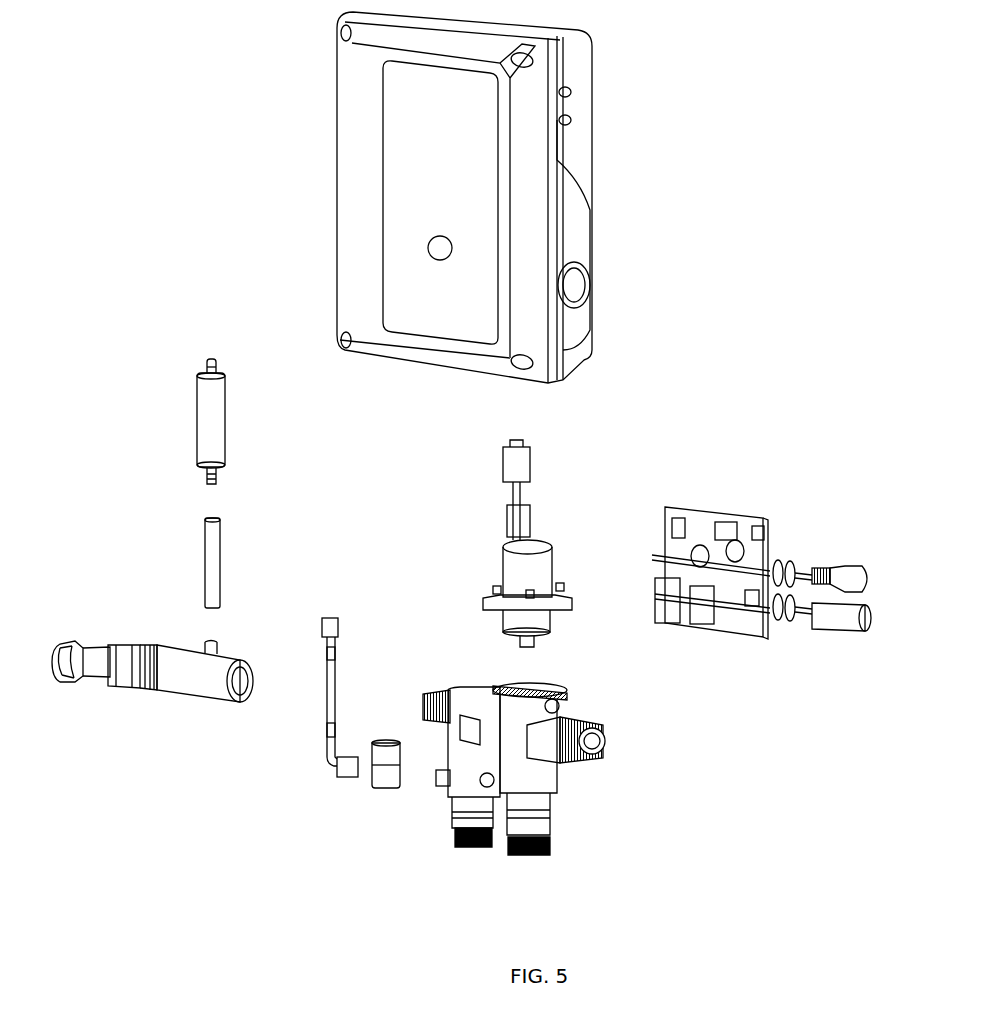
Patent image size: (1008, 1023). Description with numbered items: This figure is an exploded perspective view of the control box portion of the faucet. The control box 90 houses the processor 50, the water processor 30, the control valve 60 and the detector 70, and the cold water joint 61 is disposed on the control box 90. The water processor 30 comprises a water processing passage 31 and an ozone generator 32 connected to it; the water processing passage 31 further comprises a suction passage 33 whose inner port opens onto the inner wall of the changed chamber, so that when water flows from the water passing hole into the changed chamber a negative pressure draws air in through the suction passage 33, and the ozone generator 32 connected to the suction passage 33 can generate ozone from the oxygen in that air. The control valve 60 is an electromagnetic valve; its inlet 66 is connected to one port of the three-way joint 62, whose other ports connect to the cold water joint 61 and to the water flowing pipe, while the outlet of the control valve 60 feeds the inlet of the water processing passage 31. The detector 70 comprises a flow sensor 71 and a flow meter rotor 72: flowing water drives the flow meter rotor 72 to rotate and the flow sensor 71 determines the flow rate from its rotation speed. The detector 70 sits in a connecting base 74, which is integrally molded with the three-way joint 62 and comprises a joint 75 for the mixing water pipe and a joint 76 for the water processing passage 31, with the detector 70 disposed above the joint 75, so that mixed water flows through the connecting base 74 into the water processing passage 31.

The control box 90 is at (367, 118).
The water processor 30 is at (158, 626).
The water processing passage 31 is at (192, 687).
The ozone generator 32 is at (195, 417).
The suction passage 33 is at (215, 570).
The processor 50 is at (700, 523).
The control valve 60 is at (522, 568).
The cold water joint 61 is at (548, 850).
The three-way joint 62 is at (548, 762).
The inlet of the control valve 66 is at (537, 683).
The detector 70 is at (366, 716).
The flow sensor 71 is at (325, 753).
The flow meter rotor 72 is at (385, 775).
The connecting base 74 is at (472, 783).
The joint for the mixing water pipe 75 is at (470, 849).
The joint for the water processing passage 76 is at (437, 688).